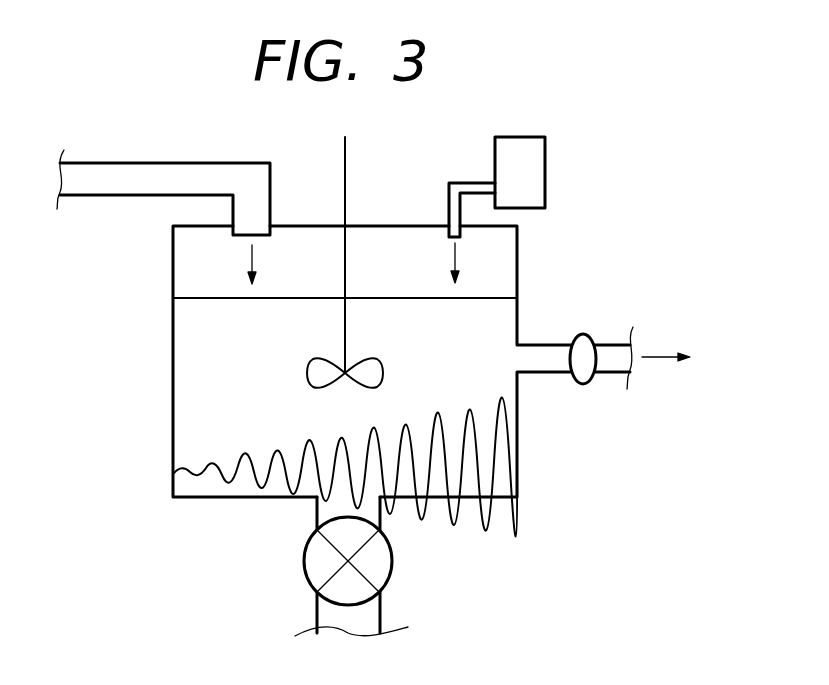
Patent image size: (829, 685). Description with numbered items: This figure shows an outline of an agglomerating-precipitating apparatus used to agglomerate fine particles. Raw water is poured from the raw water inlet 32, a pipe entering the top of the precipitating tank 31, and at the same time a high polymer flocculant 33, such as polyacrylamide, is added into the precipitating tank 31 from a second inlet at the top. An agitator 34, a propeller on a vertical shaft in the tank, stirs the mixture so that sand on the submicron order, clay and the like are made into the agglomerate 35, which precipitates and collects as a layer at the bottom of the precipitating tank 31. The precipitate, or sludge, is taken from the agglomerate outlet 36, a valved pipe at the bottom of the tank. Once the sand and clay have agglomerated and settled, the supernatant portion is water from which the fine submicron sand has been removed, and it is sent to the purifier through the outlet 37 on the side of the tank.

The precipitating tank 31 is at (172, 378).
The raw water inlet 32 is at (103, 188).
The flocculant 33 is at (538, 173).
The agitator 34 is at (313, 373).
The agglomerate 35 is at (497, 463).
The agglomerate outlet 36 is at (378, 512).
The outlet to the purifier 37 is at (552, 362).